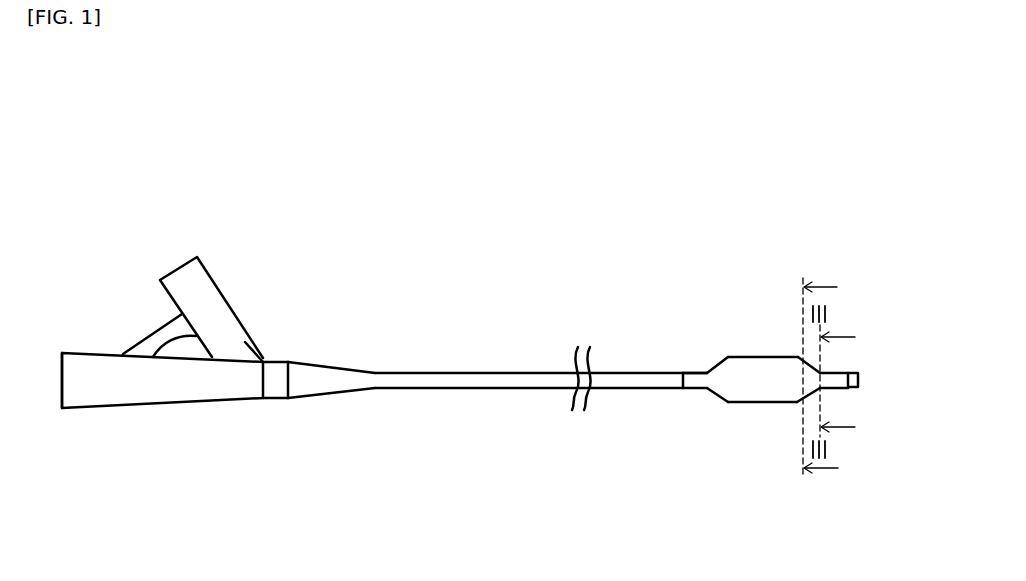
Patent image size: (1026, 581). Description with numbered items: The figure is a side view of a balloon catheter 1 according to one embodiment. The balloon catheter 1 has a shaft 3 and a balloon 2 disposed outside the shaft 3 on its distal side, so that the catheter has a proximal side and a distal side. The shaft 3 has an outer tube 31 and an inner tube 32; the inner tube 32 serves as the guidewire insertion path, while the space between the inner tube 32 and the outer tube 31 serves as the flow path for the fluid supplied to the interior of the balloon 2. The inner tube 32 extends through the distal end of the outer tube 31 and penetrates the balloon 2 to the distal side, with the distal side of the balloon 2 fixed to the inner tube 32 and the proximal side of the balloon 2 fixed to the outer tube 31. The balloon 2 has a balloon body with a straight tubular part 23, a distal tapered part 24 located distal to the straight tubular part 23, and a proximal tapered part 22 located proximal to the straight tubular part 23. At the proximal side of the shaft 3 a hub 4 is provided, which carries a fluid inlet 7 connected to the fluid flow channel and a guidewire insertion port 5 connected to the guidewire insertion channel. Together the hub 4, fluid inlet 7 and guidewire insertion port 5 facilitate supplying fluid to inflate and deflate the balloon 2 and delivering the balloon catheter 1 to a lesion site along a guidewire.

The balloon catheter 1 is at (125, 121).
The balloon 2 is at (770, 357).
The shaft 3 is at (630, 372).
The hub 4 is at (170, 408).
The guidewire insertion port 5 is at (60, 378).
The fluid inlet 7 is at (180, 267).
The proximal tapered part 22 is at (715, 403).
The straight tubular part 23 is at (755, 403).
The distal tapered part 24 is at (826, 398).
The outer tube 31 is at (641, 389).
The inner tube 32 is at (859, 373).